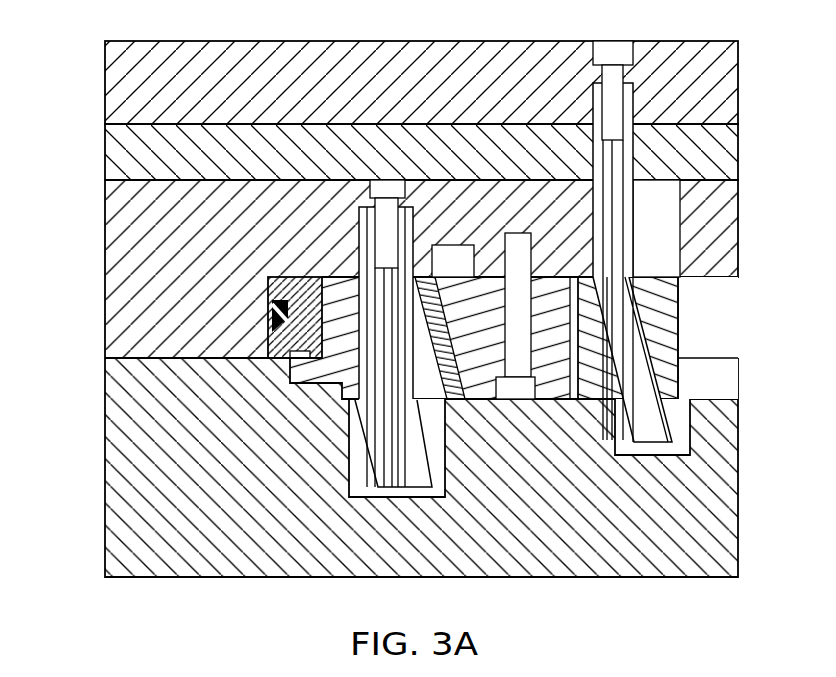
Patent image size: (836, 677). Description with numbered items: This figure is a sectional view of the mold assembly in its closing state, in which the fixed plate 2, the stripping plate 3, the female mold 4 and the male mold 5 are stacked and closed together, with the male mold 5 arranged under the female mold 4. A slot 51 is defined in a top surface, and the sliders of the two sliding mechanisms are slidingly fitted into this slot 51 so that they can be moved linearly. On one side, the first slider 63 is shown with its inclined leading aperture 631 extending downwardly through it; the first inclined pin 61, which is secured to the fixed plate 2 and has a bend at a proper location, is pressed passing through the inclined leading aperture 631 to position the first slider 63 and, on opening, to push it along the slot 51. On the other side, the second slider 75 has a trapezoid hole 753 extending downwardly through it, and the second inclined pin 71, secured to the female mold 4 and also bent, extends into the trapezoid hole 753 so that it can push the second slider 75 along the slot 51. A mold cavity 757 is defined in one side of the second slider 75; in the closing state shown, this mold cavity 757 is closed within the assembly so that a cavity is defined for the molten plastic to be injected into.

The fixed plate 2 is at (125, 70).
The stripping plate 3 is at (133, 151).
The female mold 4 is at (122, 264).
The male mold 5 is at (130, 474).
The slot 51 is at (726, 381).
The trapezoid hole 753 is at (445, 400).
The first inclined pin 61 is at (617, 232).
The first slider 63 is at (668, 310).
The inclined leading aperture 631 is at (665, 358).
The second inclined pin 71 is at (387, 425).
The second slider 75 is at (300, 366).
The mold cavity 757 is at (268, 318).